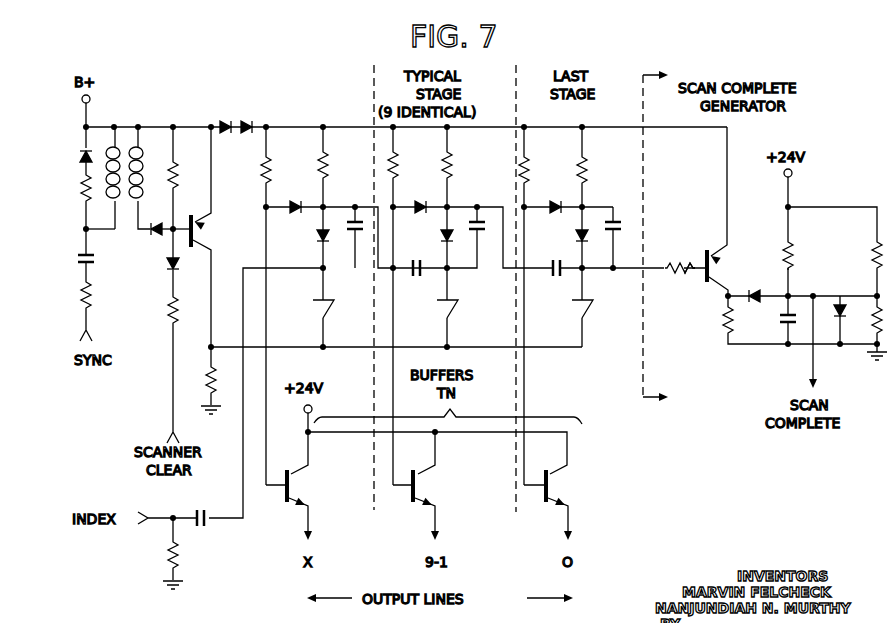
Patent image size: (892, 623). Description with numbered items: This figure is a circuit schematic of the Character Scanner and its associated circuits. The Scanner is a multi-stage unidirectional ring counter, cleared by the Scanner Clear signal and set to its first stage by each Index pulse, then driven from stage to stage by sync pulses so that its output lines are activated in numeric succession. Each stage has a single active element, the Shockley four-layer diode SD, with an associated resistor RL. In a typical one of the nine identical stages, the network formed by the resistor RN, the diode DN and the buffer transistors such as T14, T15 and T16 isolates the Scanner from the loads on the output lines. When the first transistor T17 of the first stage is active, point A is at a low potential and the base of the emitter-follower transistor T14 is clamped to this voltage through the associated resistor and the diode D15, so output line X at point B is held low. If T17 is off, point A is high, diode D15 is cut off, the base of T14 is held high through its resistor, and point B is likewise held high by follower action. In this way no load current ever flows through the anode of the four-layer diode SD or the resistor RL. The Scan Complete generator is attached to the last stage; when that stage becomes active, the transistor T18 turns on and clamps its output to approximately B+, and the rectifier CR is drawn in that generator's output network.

The emitter-follower transistor T14 is at (297, 505).
The buffer transistor T15 is at (424, 505).
The buffer transistor T16 is at (556, 505).
The first transistor T17 is at (203, 237).
The transistor T18 is at (728, 211).
The diode D15 is at (294, 199).
The diode DN is at (420, 199).
The resistor RL is at (395, 167).
The resistor RN is at (403, 306).
The 4-layer diode SD is at (456, 311).
The clamp rectifier CR is at (838, 308).
The point A is at (358, 226).
The point B is at (328, 522).